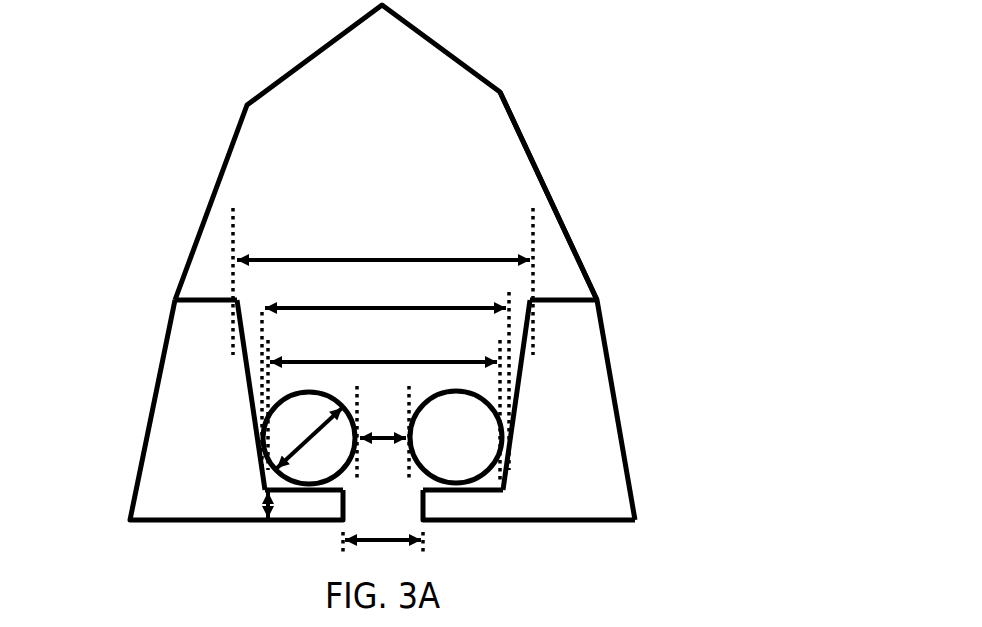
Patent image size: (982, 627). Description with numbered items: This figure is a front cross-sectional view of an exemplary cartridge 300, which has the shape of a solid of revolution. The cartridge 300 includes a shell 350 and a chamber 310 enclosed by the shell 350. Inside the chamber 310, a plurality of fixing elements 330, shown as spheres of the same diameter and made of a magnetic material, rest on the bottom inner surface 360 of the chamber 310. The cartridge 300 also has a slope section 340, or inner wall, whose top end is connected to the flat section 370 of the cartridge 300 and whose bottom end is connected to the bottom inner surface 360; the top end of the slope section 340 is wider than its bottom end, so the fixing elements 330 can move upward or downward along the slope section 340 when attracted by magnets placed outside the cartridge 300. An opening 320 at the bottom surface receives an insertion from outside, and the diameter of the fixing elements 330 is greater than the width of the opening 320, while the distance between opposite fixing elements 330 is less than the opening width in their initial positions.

The cartridge 300 is at (100, 40).
The chamber 310 is at (423, 125).
The opening 320 is at (440, 523).
The fixing elements 330 is at (463, 432).
The slope section 340 is at (528, 362).
The shell 350 is at (567, 217).
The bottom inner surface 360 is at (487, 491).
The flat section 370 is at (575, 305).